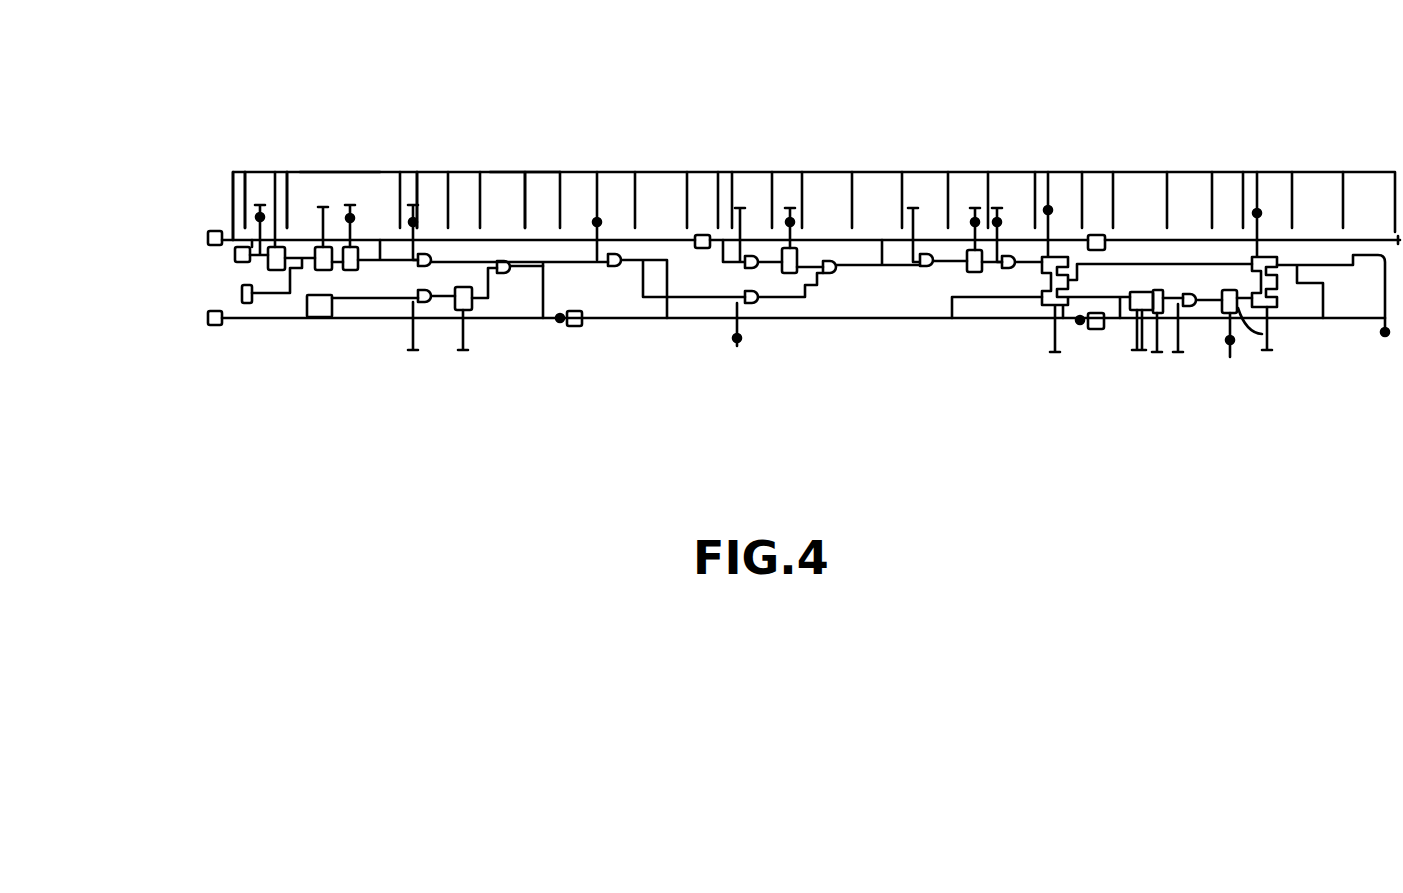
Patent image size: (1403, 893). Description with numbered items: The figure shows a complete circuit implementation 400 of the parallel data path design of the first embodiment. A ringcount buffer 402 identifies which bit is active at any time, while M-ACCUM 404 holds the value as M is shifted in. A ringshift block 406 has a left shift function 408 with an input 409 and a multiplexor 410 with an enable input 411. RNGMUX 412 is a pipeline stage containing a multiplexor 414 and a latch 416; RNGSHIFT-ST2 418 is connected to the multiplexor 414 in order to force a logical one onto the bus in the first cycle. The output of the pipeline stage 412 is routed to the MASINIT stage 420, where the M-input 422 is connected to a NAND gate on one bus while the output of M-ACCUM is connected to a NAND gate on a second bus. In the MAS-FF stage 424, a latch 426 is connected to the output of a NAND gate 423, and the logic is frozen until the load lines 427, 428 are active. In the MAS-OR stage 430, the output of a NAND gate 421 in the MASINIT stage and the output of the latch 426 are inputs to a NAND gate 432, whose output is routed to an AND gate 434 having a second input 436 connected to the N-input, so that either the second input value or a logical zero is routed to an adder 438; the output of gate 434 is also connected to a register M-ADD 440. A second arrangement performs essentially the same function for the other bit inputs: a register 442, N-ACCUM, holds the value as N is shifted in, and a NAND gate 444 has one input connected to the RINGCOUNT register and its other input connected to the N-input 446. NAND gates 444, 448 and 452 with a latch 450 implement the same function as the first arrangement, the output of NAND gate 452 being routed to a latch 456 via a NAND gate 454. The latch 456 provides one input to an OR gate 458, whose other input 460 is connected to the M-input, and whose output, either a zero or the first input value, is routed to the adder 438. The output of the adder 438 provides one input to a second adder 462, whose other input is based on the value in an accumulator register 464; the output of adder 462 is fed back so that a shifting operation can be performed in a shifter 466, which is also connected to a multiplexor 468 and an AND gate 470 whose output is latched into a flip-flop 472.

The circuit implementation 400 is at (582, 110).
The ringcount buffer 402 is at (214, 230).
The M-ACCUM 404 is at (208, 318).
The ringshift block 406 is at (244, 172).
The left shift function 408 is at (235, 256).
The input 409 is at (250, 212).
The multiplexor 410 is at (236, 268).
The enable input 411 is at (269, 172).
The RNGMUX 412 is at (342, 172).
The multiplexor 414 is at (356, 323).
The latch 416 is at (330, 272).
The RNGSHIFT-ST2 418 is at (247, 304).
The MASINIT stage 420 is at (416, 215).
The NAND gate 421 is at (415, 270).
The M-input 422 is at (445, 195).
The NAND gate 423 is at (426, 320).
The MAS-FF stage 424 is at (467, 223).
The latch 426 is at (477, 318).
The load line 427 is at (385, 180).
The load line 428 is at (464, 352).
The MAS-OR stage 430 is at (512, 172).
The NAND gate 432 is at (510, 276).
The AND gate 434 is at (616, 272).
The second input 436 is at (598, 182).
The adder 438 is at (1058, 306).
The register M-ADD 440 is at (576, 330).
The N-ACCUM register 442 is at (700, 249).
The NAND gate 444 is at (760, 304).
The N-input 446 is at (738, 344).
The NAND gate 448 is at (742, 204).
The latch 450 is at (788, 206).
The NAND gate 452 is at (834, 275).
The NAND gate 454 is at (926, 268).
The latch 456 is at (974, 274).
The OR gate 458 is at (1008, 270).
The other input 460 is at (1000, 205).
The second adder 462 is at (1268, 256).
The accumulator register 464 is at (1096, 313).
The shifter 466 is at (1142, 313).
The multiplexor 468 is at (1172, 280).
The AND gate 470 is at (1225, 338).
The flip-flop 472 is at (1267, 336).